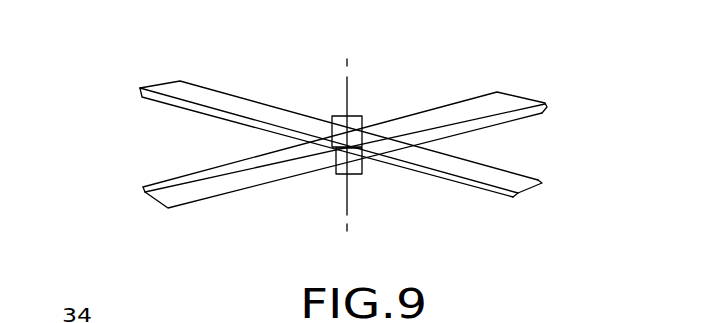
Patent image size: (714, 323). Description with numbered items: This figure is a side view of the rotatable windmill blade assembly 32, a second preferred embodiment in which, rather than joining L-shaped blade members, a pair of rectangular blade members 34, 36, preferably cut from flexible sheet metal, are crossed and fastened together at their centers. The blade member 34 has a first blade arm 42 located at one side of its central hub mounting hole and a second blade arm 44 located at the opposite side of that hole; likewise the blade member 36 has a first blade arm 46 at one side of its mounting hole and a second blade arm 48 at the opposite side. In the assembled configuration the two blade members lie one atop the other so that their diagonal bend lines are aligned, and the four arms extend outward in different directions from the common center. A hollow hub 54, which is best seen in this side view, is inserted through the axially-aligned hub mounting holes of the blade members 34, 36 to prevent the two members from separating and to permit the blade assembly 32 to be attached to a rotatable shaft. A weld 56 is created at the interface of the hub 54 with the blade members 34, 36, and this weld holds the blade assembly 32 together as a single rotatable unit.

The rotatable windmill blade assembly 32 is at (368, 108).
The blade member 34 is at (159, 83).
The blade member 36 is at (523, 198).
The first blade arm 42 is at (445, 115).
The second blade arm 44 is at (240, 113).
The first blade arm 46 is at (232, 182).
The second blade arm 48 is at (448, 172).
The hollow hub 54 is at (340, 165).
The weld 56 is at (343, 116).